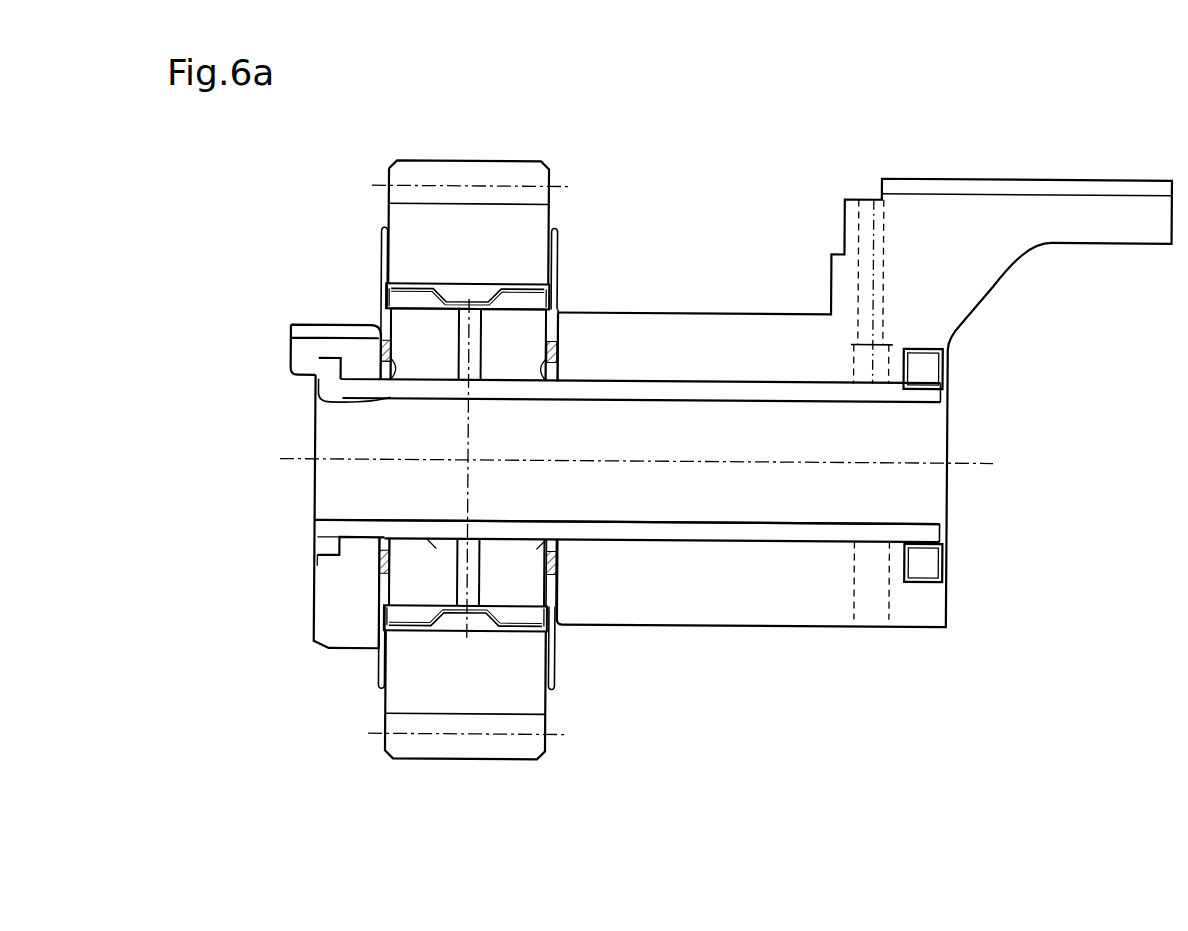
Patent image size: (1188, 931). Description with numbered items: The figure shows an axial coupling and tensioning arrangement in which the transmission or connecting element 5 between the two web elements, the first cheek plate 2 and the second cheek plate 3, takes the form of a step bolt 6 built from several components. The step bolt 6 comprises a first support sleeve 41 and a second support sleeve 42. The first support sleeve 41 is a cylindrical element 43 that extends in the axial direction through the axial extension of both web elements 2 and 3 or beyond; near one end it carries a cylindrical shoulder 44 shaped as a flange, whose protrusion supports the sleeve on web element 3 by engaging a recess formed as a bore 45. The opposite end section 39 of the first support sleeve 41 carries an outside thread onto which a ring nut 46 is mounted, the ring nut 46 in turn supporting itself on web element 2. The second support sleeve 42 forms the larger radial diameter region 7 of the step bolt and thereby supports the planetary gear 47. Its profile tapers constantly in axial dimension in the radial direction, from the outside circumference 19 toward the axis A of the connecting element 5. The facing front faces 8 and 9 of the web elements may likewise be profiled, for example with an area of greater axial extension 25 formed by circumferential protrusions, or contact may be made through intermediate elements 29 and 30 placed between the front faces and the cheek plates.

The first cheek plate 2 is at (1010, 218).
The second cheek plate 3 is at (326, 360).
The transmission element 5 is at (627, 490).
The step bolt 6 is at (690, 583).
The larger radial diameter region 7 is at (393, 633).
The front face 8 is at (548, 385).
The front face 9 is at (365, 401).
The outside circumference 19 is at (513, 617).
The area of greater axial extension 25 is at (428, 352).
The intermediate element 29 is at (378, 332).
The intermediate element 30 is at (548, 345).
The end section 39 is at (985, 411).
The first support sleeve 41 is at (822, 537).
The second support sleeve 42 is at (557, 312).
The cylindrical element 43 is at (775, 535).
The cylindrical shoulder 44 is at (330, 543).
The bore 45 is at (320, 556).
The ring nut 46 is at (930, 565).
The planetary gear 47 is at (468, 690).
The axis A is at (978, 462).